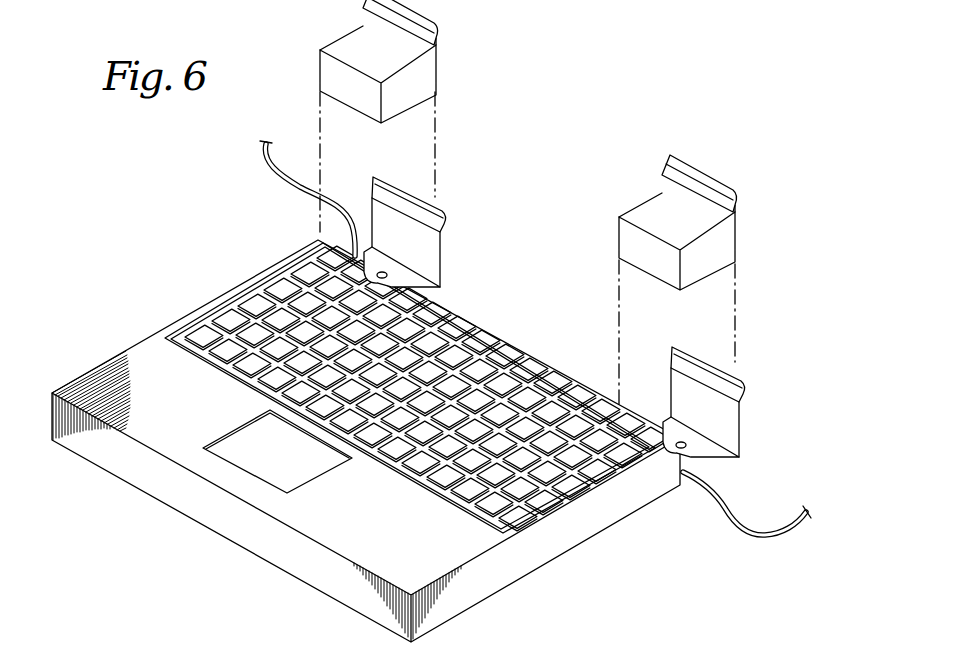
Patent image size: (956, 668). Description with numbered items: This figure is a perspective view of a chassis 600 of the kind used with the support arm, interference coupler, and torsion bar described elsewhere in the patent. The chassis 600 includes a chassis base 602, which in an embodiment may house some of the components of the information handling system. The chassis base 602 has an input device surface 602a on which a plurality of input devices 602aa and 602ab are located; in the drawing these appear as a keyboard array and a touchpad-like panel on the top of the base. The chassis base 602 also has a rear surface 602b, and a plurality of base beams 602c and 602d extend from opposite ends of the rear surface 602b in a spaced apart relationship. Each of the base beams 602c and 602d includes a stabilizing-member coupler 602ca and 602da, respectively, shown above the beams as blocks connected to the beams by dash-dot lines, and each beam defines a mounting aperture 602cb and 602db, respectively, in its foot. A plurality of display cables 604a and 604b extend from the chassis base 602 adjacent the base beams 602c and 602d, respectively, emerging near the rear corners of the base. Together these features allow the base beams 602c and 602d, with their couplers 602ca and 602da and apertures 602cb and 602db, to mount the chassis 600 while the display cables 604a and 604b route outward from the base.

The chassis 600 is at (557, 174).
The chassis base 602 is at (576, 552).
The input device surface 602a is at (148, 352).
The input device 602aa is at (268, 296).
The input device 602ab is at (227, 448).
The rear surface 602b is at (523, 356).
The base beam 602c is at (442, 270).
The stabilizing-member coupler 602ca is at (437, 45).
The mounting aperture 602cb is at (390, 274).
The base beam 602d is at (742, 440).
The stabilizing-member coupler 602da is at (737, 212).
The mounting aperture 602db is at (690, 445).
The display cable 604a is at (283, 178).
The display cable 604b is at (765, 537).